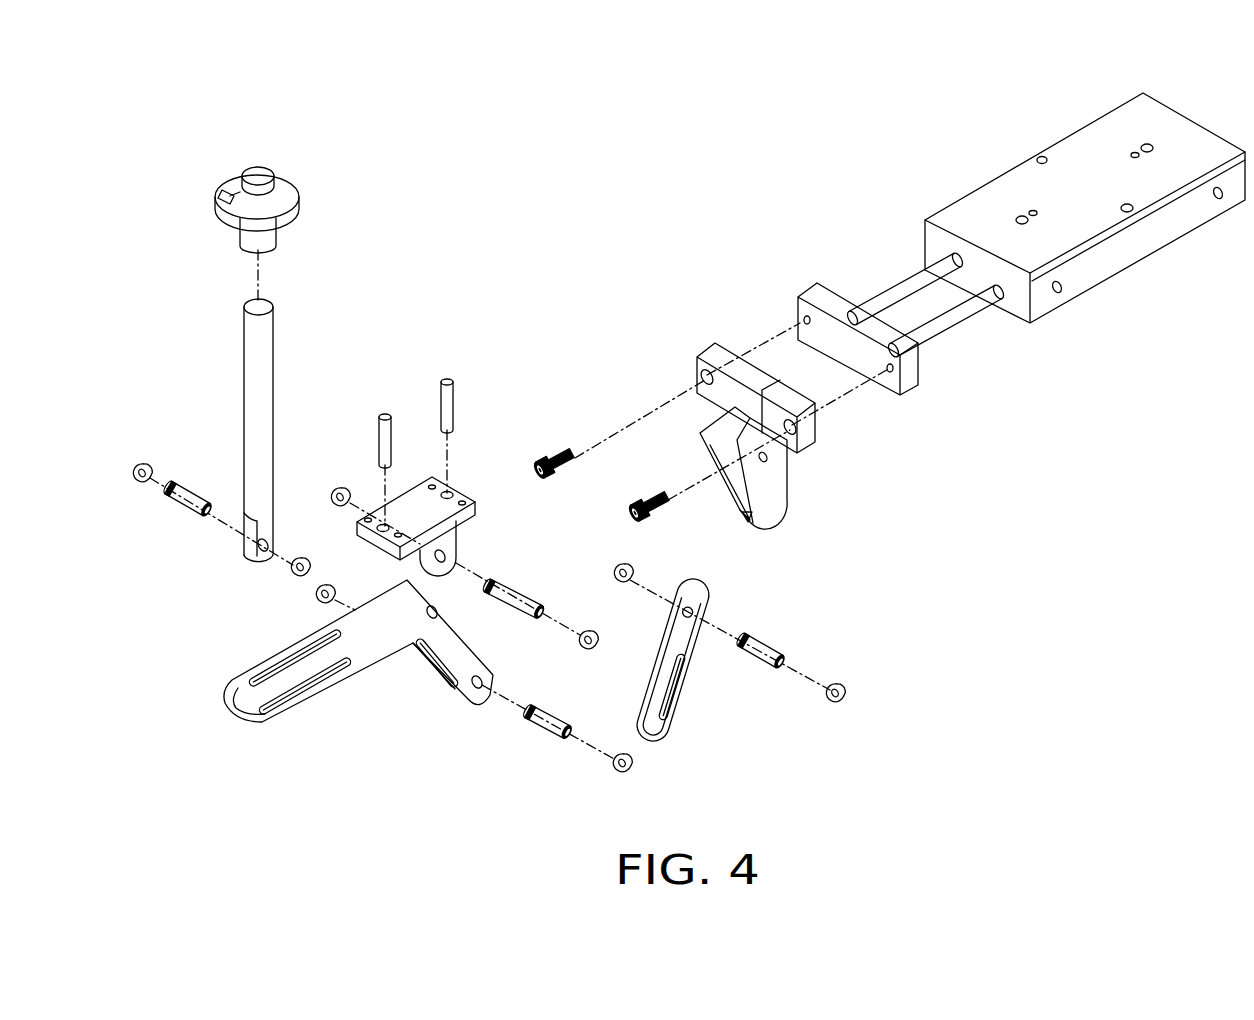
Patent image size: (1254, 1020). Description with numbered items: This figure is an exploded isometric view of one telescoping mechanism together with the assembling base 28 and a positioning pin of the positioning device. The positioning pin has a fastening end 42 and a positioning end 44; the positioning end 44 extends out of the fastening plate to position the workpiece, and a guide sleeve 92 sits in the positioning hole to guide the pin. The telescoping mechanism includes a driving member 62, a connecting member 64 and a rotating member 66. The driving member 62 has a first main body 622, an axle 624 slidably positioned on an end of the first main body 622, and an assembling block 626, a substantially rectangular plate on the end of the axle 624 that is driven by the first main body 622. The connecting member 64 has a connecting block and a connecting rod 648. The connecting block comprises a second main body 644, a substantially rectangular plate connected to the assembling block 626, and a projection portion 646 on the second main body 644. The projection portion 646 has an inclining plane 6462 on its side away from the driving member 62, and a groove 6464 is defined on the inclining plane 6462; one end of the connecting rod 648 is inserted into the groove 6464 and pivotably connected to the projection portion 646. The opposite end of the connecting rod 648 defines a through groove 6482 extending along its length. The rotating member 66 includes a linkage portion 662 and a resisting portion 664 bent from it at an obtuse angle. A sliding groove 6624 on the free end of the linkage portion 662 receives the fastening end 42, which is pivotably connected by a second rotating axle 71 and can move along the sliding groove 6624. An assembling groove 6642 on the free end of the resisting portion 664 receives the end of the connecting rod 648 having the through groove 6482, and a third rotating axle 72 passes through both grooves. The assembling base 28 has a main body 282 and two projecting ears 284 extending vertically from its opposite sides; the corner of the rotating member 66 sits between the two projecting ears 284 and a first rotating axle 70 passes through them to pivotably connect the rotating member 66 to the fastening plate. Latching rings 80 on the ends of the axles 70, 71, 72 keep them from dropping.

The assembling base 28 is at (465, 507).
The main body 282 is at (465, 500).
The projecting ears 284 is at (447, 547).
The fastening end 42 is at (245, 545).
The positioning end 44 is at (217, 440).
The driving member 62 is at (1021, 271).
The first main body 622 is at (1085, 275).
The axle 624 is at (947, 318).
The assembling block 626 is at (904, 356).
The connecting member 64 is at (711, 519).
The second main body 644 is at (722, 356).
The projection portion 646 is at (777, 488).
The inclining plane 6462 is at (728, 480).
The groove 6464 is at (745, 515).
The connecting rod 648 is at (730, 675).
The through groove 6482 is at (672, 700).
The rotating member 66 is at (351, 691).
The linkage portion 662 is at (340, 685).
The sliding groove 6624 is at (272, 710).
The resisting portion 664 is at (440, 670).
The assembling groove 6642 is at (469, 698).
The first rotating axle 70 is at (520, 598).
The second rotating axle 71 is at (190, 505).
The third rotating axle 72 is at (552, 735).
The latching rings 80 is at (315, 598).
The guide sleeve 92 is at (300, 190).